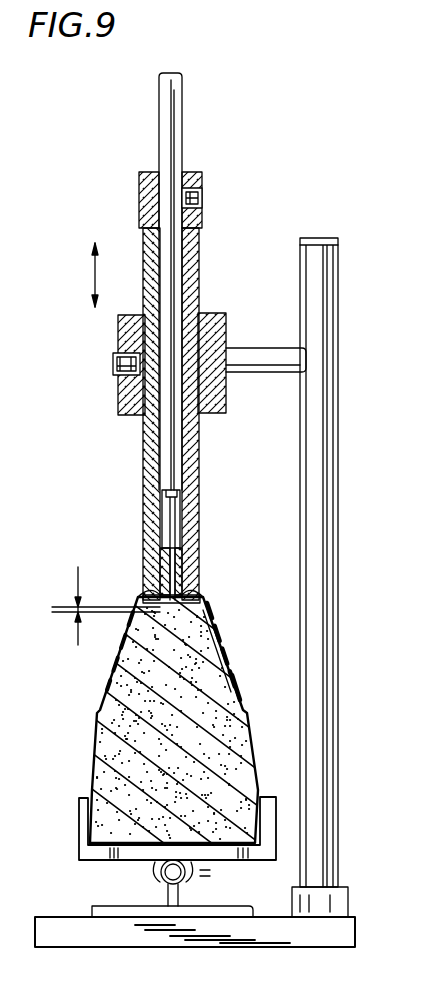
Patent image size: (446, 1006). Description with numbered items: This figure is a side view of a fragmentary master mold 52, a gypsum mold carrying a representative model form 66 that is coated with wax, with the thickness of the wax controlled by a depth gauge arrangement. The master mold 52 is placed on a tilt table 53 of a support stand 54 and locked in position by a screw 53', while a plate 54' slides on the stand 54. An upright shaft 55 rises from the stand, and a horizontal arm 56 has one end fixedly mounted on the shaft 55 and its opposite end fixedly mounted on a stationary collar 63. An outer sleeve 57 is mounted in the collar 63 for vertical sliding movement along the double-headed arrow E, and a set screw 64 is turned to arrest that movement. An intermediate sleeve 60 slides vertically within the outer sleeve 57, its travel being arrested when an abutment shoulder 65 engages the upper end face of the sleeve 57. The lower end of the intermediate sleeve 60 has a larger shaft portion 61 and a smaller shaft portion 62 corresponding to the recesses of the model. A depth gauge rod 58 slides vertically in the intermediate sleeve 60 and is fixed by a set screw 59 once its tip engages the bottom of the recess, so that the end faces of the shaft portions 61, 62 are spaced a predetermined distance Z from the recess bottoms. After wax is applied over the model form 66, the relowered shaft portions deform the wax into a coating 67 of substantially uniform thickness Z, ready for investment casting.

The master mold 52 is at (115, 757).
The tilt table 53 is at (158, 828).
The screw 53' is at (206, 883).
The support stand 54 is at (215, 877).
The plate 54' is at (155, 900).
The upright shaft 55 is at (339, 660).
The horizontal arm 56 is at (255, 358).
The outer sleeve 57 is at (190, 452).
The depth gauge rod 58 is at (168, 420).
The set screw 59 is at (205, 190).
The intermediate sleeve 60 is at (176, 565).
The larger shaft portion 61 is at (196, 587).
The smaller shaft portion 62 is at (214, 630).
The stationary collar 63 is at (220, 325).
The set screw 64 is at (113, 364).
The abutment shoulder 65 is at (197, 240).
The model form 66 is at (123, 662).
The wax coating 67 is at (227, 666).
The double-headed arrow E is at (91, 272).
The predetermined distance Z is at (62, 610).